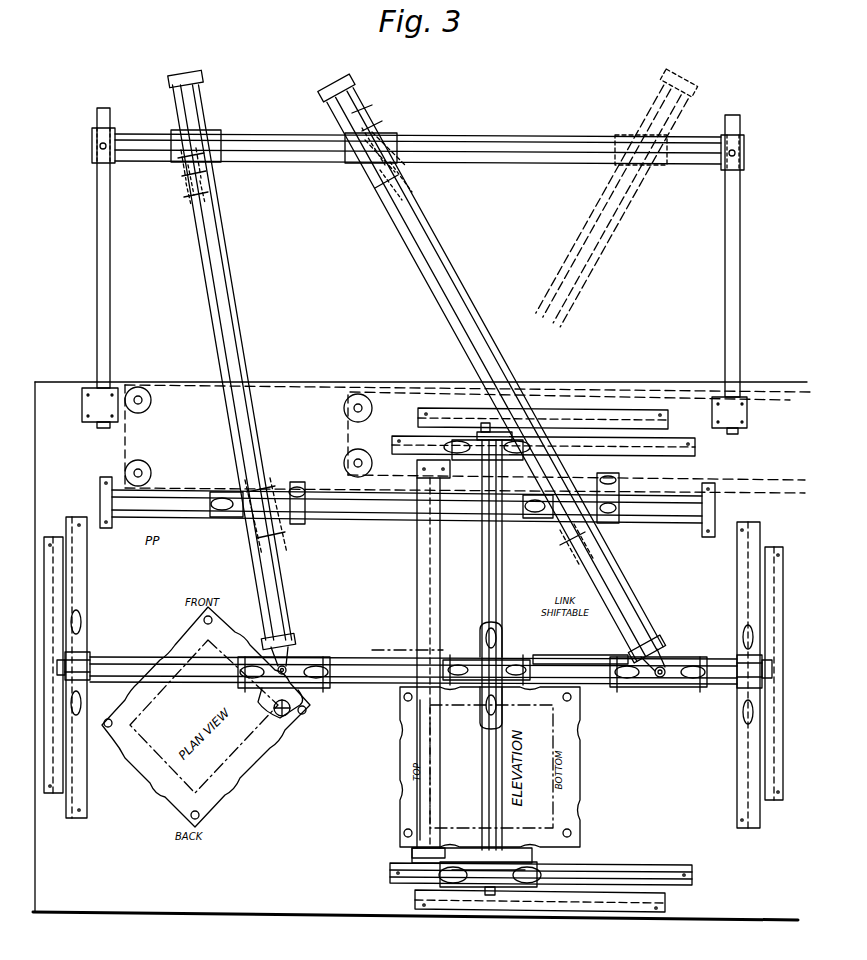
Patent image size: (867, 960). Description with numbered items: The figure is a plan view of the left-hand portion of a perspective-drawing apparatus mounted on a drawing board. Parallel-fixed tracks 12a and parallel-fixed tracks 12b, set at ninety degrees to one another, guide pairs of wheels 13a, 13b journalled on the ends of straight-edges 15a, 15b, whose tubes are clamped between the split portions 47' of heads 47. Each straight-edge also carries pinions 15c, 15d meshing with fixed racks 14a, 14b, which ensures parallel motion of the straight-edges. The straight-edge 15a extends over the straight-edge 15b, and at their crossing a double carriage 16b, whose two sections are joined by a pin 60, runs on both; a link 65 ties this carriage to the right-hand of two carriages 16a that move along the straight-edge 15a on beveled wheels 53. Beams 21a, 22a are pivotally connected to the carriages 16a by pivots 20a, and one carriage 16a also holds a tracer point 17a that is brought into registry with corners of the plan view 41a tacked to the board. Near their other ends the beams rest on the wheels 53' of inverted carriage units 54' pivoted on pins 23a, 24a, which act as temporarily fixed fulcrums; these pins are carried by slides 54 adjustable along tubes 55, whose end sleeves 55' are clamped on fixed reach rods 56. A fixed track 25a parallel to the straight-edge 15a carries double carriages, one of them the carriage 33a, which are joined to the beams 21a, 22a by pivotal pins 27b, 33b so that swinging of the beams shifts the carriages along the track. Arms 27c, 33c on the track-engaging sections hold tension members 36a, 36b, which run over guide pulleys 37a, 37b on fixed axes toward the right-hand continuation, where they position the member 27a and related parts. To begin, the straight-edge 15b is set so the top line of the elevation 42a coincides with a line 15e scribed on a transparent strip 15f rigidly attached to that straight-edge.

The parallel-fixed tracks 12a is at (87, 588).
The parallel-fixed tracks 12b is at (650, 866).
The wheels 13a is at (80, 622).
The wheels 13b is at (420, 437).
The fixed rack 14a is at (48, 596).
The fixed rack 14b is at (598, 408).
The straight-edge 15a is at (135, 657).
The straight-edge 15b is at (502, 590).
The pinion 15c is at (57, 668).
The pinion 15d is at (505, 430).
The line 15e is at (430, 578).
The transparent strip 15f is at (415, 740).
The carriages 16a is at (322, 664).
The double carriage 16b is at (504, 657).
The tracer point 17a is at (290, 716).
The pivots 20a is at (322, 656).
The beam 21a is at (238, 262).
The beam 22a is at (438, 240).
The pin 23a is at (186, 168).
The pin 24a is at (388, 148).
The fixed track 25a is at (334, 516).
The member 27a is at (228, 518).
The pin 27b is at (268, 490).
The arm 27c is at (297, 488).
The double carriage 33a is at (537, 520).
The pin 33b is at (574, 552).
The arm 33c is at (612, 480).
The tension member 36a is at (150, 478).
The tension member 36b is at (346, 430).
The guide pulleys 37a is at (128, 466).
The guide pulleys 37b is at (355, 452).
The plan view 41a is at (206, 717).
The elevation 42a is at (490, 767).
The heads 47 is at (413, 675).
The split portions 47' is at (490, 875).
The wheels 53 is at (439, 685).
The wheels 53' is at (287, 192).
The slides 54 is at (420, 145).
The inverted carriage units 54' is at (305, 145).
The rods or tubes 55 is at (418, 161).
The sleeves 55' is at (412, 148).
The fixed reach rods 56 is at (97, 232).
The pin 60 is at (470, 660).
The link 65 is at (402, 650).